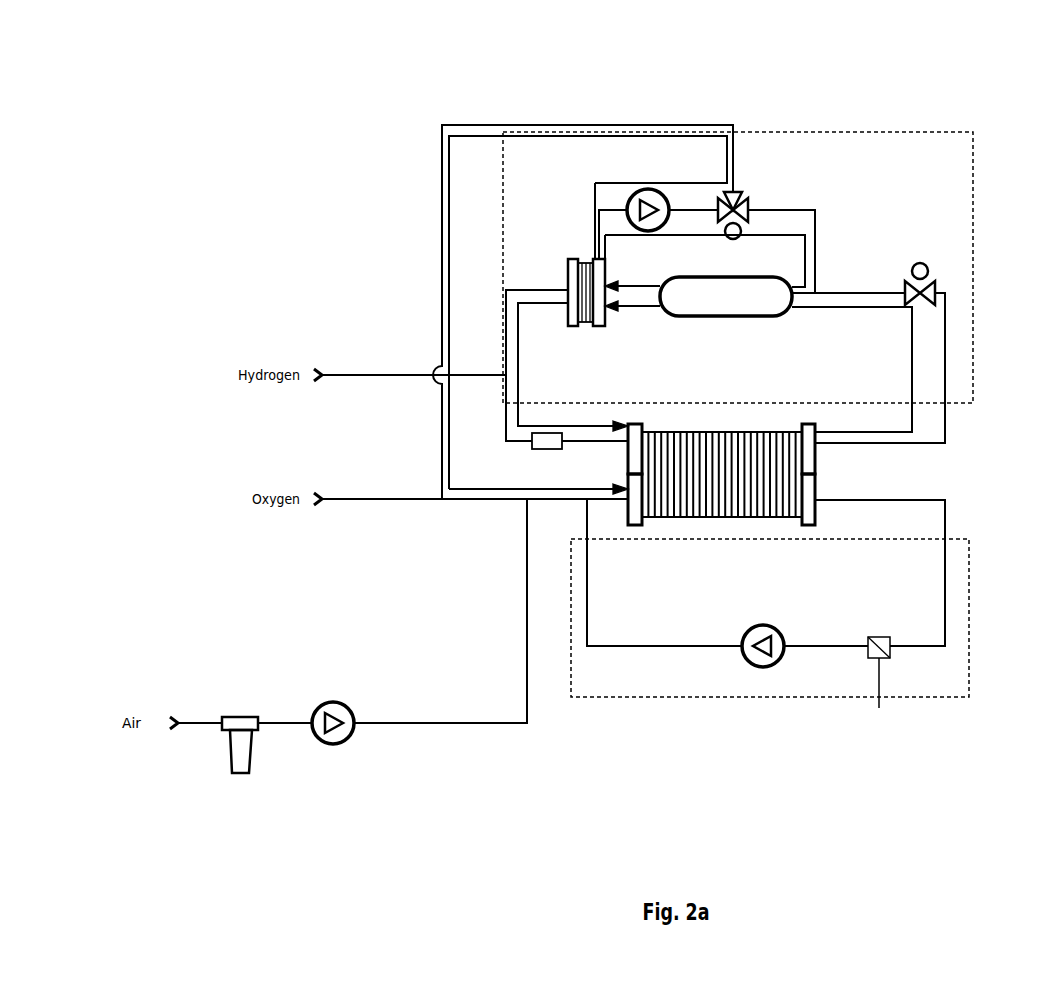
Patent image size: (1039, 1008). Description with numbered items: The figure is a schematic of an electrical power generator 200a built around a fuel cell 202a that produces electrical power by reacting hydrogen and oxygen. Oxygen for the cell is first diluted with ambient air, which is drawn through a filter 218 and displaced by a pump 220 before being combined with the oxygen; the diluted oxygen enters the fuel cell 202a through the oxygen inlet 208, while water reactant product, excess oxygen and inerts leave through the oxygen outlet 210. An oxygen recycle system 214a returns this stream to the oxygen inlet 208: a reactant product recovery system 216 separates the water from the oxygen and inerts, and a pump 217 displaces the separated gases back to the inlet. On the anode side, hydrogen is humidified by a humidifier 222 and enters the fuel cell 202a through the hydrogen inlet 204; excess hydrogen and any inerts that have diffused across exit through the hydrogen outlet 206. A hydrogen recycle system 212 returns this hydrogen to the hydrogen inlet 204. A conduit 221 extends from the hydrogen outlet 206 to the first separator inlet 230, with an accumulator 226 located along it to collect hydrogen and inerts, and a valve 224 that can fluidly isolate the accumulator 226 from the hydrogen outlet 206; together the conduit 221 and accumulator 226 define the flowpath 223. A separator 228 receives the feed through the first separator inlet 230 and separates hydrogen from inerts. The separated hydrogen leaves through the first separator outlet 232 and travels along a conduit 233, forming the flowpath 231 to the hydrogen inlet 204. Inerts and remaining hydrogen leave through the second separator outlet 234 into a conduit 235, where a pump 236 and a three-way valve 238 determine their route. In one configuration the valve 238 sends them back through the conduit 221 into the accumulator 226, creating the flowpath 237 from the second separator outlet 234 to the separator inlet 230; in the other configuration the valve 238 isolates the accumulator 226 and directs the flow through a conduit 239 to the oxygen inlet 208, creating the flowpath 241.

The electrical power generator 200a is at (749, 46).
The hydrogen recycle system 212 is at (834, 80).
The conduit 239 is at (455, 126).
The flowpath 241 is at (466, 136).
The conduit 235 is at (595, 208).
The pump 236 is at (648, 188).
The three-way valve 238 is at (744, 197).
The flowpath 237 is at (806, 236).
The second separator outlet 234 is at (594, 256).
The first separator outlet 232 is at (566, 289).
The separator 228 is at (578, 328).
The conduit 233 is at (505, 300).
The flowpath 231 is at (520, 318).
The first separator inlet 230 is at (608, 289).
The accumulator 226 is at (782, 318).
The flowpath 223 is at (869, 309).
The valve 224 is at (920, 260).
The conduit 221 is at (946, 337).
The humidifier 222 is at (547, 433).
The fuel cell 202a is at (757, 433).
The hydrogen inlet 204 is at (627, 443).
The hydrogen outlet 206 is at (817, 443).
The oxygen inlet 208 is at (627, 502).
The oxygen outlet 210 is at (817, 500).
The oxygen recycle system 214a is at (960, 520).
The pump 217 is at (762, 623).
The reactant product recovery system 216 is at (878, 633).
The filter 218 is at (244, 715).
The pump 220 is at (337, 698).